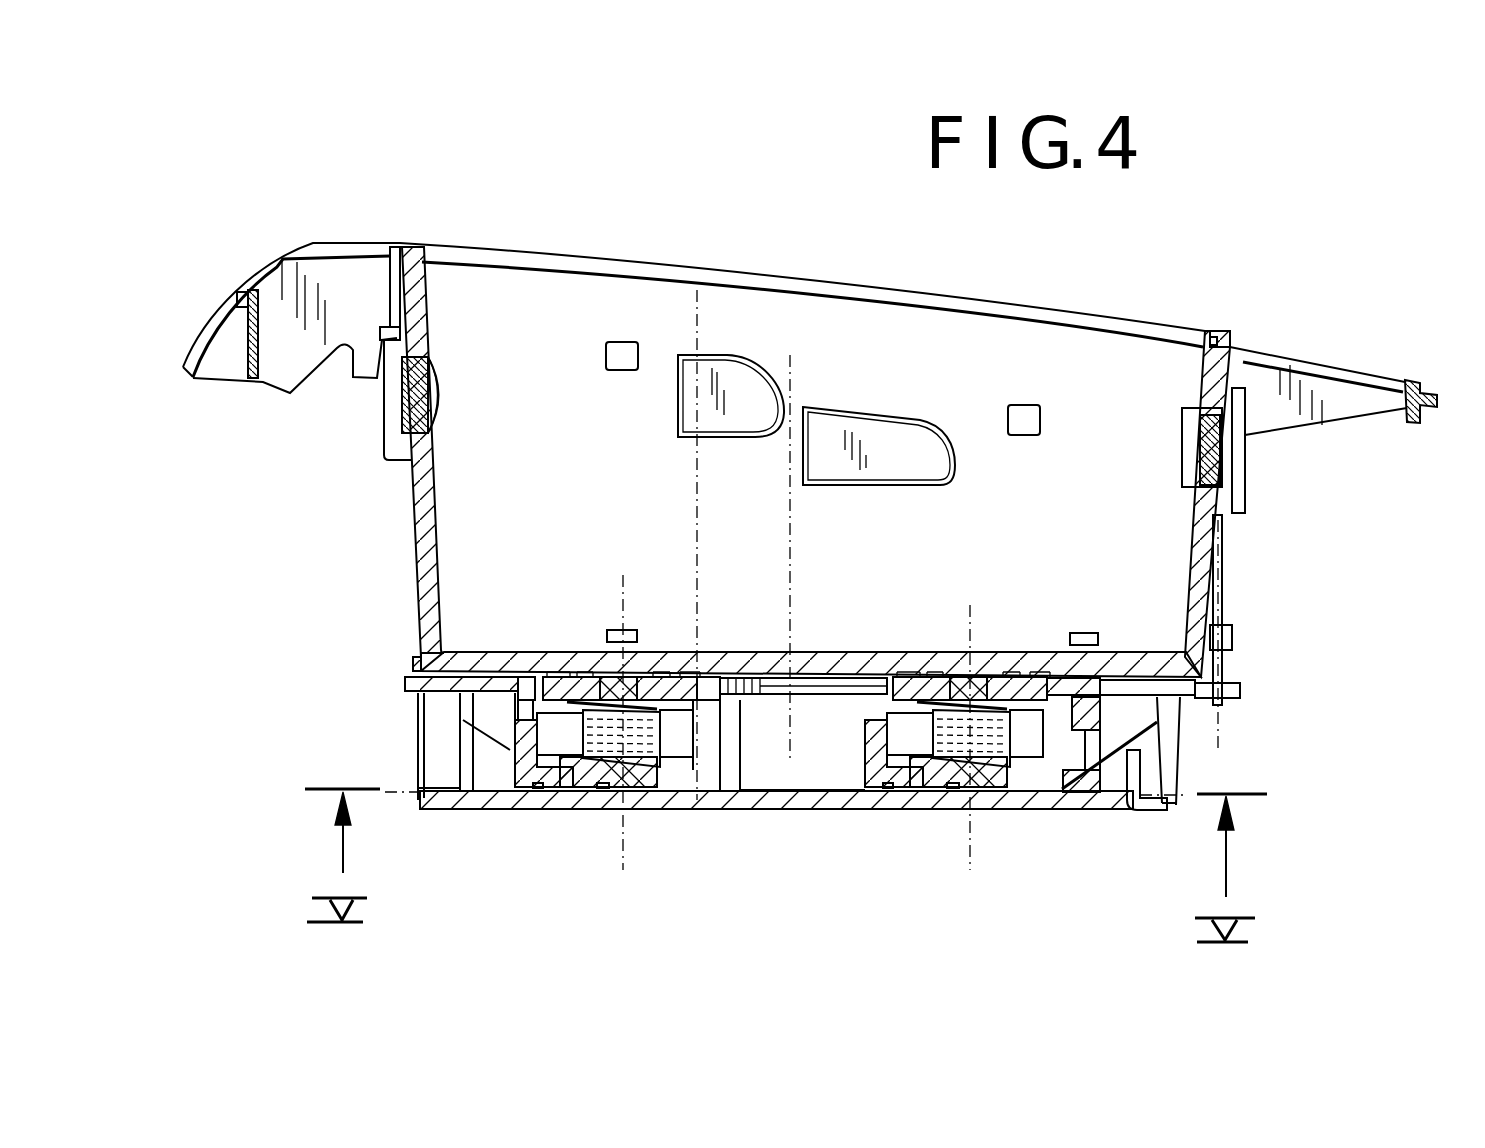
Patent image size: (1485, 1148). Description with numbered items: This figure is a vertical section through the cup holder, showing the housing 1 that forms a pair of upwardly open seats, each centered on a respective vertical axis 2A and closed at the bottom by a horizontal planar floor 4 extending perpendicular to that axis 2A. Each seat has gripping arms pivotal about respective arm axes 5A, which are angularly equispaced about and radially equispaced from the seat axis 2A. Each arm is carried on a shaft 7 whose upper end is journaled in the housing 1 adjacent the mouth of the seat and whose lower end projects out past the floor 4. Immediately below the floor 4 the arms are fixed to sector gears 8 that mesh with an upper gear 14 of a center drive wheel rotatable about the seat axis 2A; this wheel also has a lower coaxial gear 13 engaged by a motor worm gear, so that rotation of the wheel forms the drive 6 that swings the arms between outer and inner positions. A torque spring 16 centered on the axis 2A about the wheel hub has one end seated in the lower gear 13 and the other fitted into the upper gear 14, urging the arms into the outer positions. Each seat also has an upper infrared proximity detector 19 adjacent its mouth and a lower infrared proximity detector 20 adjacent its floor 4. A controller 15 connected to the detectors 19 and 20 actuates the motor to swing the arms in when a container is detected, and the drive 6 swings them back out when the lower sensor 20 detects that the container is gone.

The housing 1 is at (403, 549).
The vertical axis 2A is at (612, 626).
The floor 4 is at (833, 665).
The arm axis 5A is at (698, 330).
The drive 6 is at (612, 814).
The shaft 7 is at (1224, 582).
The sector gear 8 is at (1232, 689).
The lower gear 13 is at (1043, 782).
The upper gear 14 is at (532, 674).
The controller 15 is at (405, 683).
The torque spring 16 is at (600, 741).
The upper infrared send/receive proximity detector 19 is at (606, 357).
The lower infrared send/receive proximity detector 20 is at (607, 634).